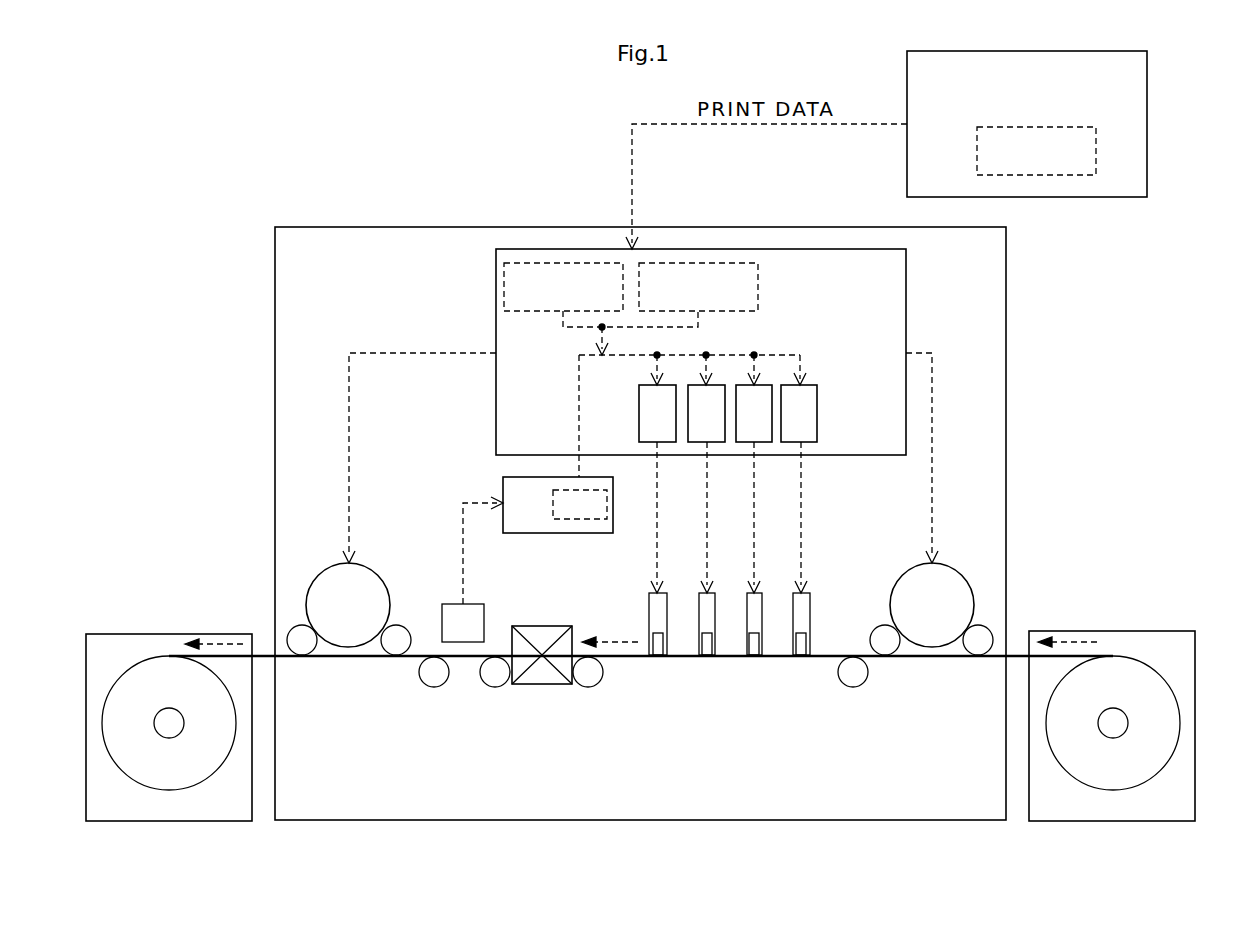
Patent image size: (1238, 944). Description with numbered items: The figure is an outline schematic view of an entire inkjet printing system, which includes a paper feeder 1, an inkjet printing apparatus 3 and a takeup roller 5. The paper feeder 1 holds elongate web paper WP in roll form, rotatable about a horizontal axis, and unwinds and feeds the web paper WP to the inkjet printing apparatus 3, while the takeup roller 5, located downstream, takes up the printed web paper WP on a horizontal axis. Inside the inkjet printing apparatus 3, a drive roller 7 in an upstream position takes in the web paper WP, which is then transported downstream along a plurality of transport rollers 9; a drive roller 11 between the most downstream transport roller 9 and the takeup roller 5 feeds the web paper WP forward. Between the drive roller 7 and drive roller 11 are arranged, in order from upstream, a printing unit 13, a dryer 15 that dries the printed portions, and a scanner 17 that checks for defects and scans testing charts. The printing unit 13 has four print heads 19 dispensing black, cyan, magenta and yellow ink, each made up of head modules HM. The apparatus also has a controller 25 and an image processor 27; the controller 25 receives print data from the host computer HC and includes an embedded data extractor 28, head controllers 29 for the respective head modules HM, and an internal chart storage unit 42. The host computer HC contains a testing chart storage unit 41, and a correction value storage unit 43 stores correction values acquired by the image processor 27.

The paper feeder 1 is at (1108, 626).
The inkjet printing apparatus 3 is at (1012, 311).
The takeup roller 5 is at (181, 628).
The drive roller 7 is at (958, 566).
The transport rollers 9 is at (435, 687).
The drive roller 11 is at (322, 565).
The printing unit 13 is at (762, 568).
The dryer 15 is at (541, 684).
The scanner 17 is at (442, 620).
The print heads 19 is at (756, 591).
The controller 25 is at (908, 287).
The image processor 27 is at (513, 534).
The embedded data extractor 28 is at (697, 263).
The head controllers 29 is at (728, 413).
The testing chart storage unit 41 is at (1043, 127).
The internal chart storage unit 42 is at (565, 263).
The correction value storage unit 43 is at (579, 519).
The host computer HC is at (905, 85).
The web paper WP is at (138, 660).
The head modules HM is at (658, 660).